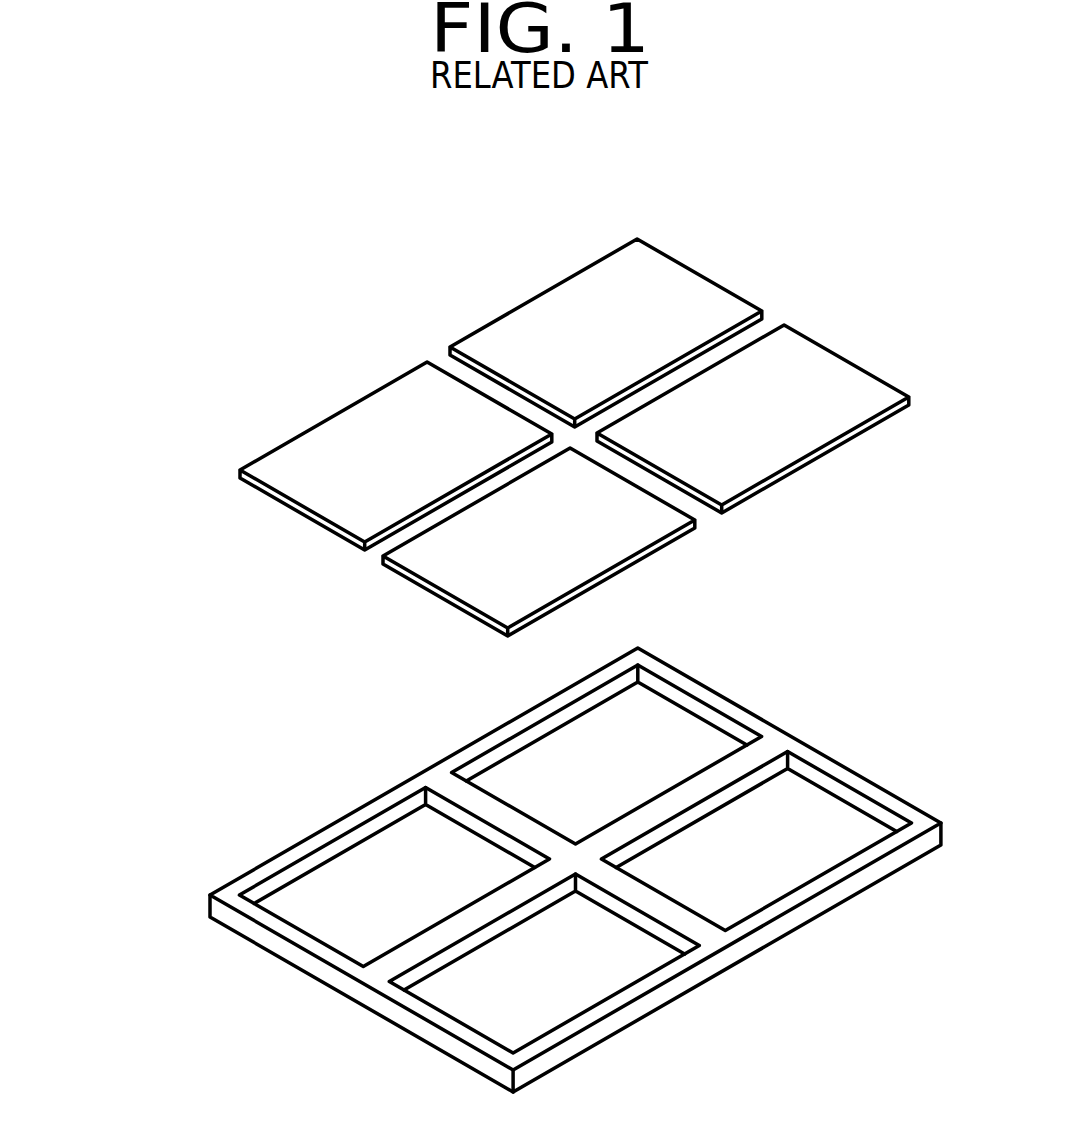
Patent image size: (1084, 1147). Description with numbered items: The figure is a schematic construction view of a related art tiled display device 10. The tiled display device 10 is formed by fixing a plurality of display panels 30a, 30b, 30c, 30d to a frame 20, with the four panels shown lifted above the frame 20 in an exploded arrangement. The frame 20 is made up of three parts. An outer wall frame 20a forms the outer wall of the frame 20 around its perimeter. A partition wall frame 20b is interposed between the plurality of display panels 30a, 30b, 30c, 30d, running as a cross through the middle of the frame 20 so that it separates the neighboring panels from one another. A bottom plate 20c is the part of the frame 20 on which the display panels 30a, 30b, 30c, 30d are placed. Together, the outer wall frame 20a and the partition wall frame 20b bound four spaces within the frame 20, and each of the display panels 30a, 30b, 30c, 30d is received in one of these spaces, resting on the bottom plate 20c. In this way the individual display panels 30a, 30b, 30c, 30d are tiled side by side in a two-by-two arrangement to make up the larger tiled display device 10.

The tiled display device 10 is at (167, 732).
The frame 20 is at (807, 727).
The outer wall frame 20a is at (613, 1002).
The partition wall frame 20b is at (670, 908).
The bottom plate 20c is at (472, 1018).
The display panel 30a is at (571, 284).
The display panel 30b is at (806, 441).
The display panel 30c is at (456, 588).
The display panel 30d is at (356, 414).